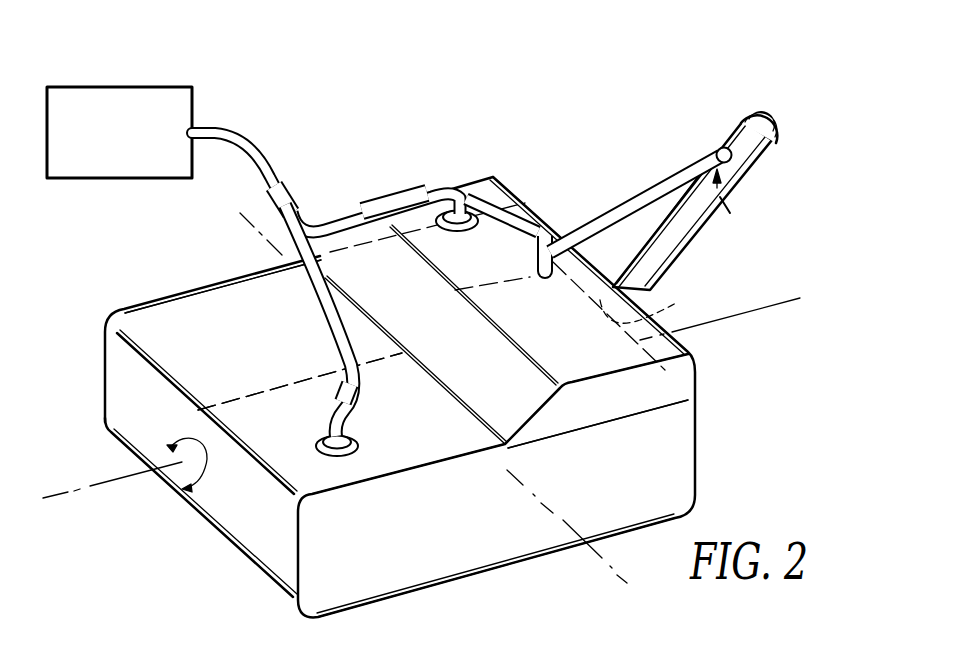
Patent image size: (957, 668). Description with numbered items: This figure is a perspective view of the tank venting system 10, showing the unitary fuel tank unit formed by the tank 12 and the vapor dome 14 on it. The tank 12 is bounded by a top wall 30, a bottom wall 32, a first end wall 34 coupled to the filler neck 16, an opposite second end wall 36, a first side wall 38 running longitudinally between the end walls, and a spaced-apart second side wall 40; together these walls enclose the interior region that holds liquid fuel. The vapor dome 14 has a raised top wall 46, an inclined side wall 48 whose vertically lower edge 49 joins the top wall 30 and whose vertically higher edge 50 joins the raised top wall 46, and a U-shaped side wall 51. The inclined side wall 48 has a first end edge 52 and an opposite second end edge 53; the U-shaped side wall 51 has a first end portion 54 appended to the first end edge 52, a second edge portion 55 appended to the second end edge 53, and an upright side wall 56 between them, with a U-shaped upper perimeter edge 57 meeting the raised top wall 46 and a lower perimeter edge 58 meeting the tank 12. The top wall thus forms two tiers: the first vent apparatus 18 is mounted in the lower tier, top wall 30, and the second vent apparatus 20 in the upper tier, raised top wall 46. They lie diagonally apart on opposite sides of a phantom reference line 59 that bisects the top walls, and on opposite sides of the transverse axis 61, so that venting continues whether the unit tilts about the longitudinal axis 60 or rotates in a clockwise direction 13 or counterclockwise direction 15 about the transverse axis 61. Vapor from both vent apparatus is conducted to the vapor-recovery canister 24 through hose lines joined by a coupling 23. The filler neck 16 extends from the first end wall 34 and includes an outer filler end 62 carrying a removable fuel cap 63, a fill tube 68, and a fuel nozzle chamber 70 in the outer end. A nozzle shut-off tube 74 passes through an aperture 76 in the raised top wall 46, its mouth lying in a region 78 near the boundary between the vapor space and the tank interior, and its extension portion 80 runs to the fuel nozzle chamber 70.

The tank venting system 10 is at (406, 123).
The tank 12 is at (191, 543).
The clockwise direction 13 is at (577, 500).
The vapor dome 14 is at (462, 266).
The counterclockwise direction 15 is at (514, 521).
The filler neck 16 is at (712, 191).
The first vent apparatus 18 is at (358, 417).
The second vent apparatus 20 is at (473, 196).
The coupling 23 is at (286, 166).
The vapor-recovery canister 24 is at (165, 96).
The top wall 30 is at (321, 481).
The bottom wall 32 is at (421, 588).
The first end wall 34 is at (697, 473).
The second end wall 36 is at (262, 556).
The first side wall 38 is at (376, 556).
The second side wall 40 is at (103, 306).
The raised top wall 46 is at (606, 358).
The inclined side wall 48 is at (506, 388).
The vertically lower edge 49 is at (457, 401).
The vertically higher edge 50 is at (518, 340).
The U-shaped side wall 51 is at (489, 156).
The first end edge 52 is at (537, 418).
The second end edge 53 is at (321, 222).
The first end portion 54 is at (647, 412).
The second edge portion 55 is at (470, 176).
The upright side wall 56 is at (653, 308).
The U-shaped upper perimeter edge 57 is at (392, 192).
The lower perimeter edge 58 is at (368, 247).
The reference line 59 is at (260, 390).
The longitudinal axis 60 is at (124, 479).
The transverse axis 61 is at (598, 557).
The outer filler end 62 is at (756, 156).
The fuel cap 63 is at (774, 118).
The fill tube 68 is at (657, 234).
The fuel nozzle chamber 70 is at (735, 214).
The nozzle shut-off tube 74 is at (664, 147).
The aperture 76 is at (547, 283).
The region 78 is at (721, 145).
The extension portion 80 is at (614, 207).